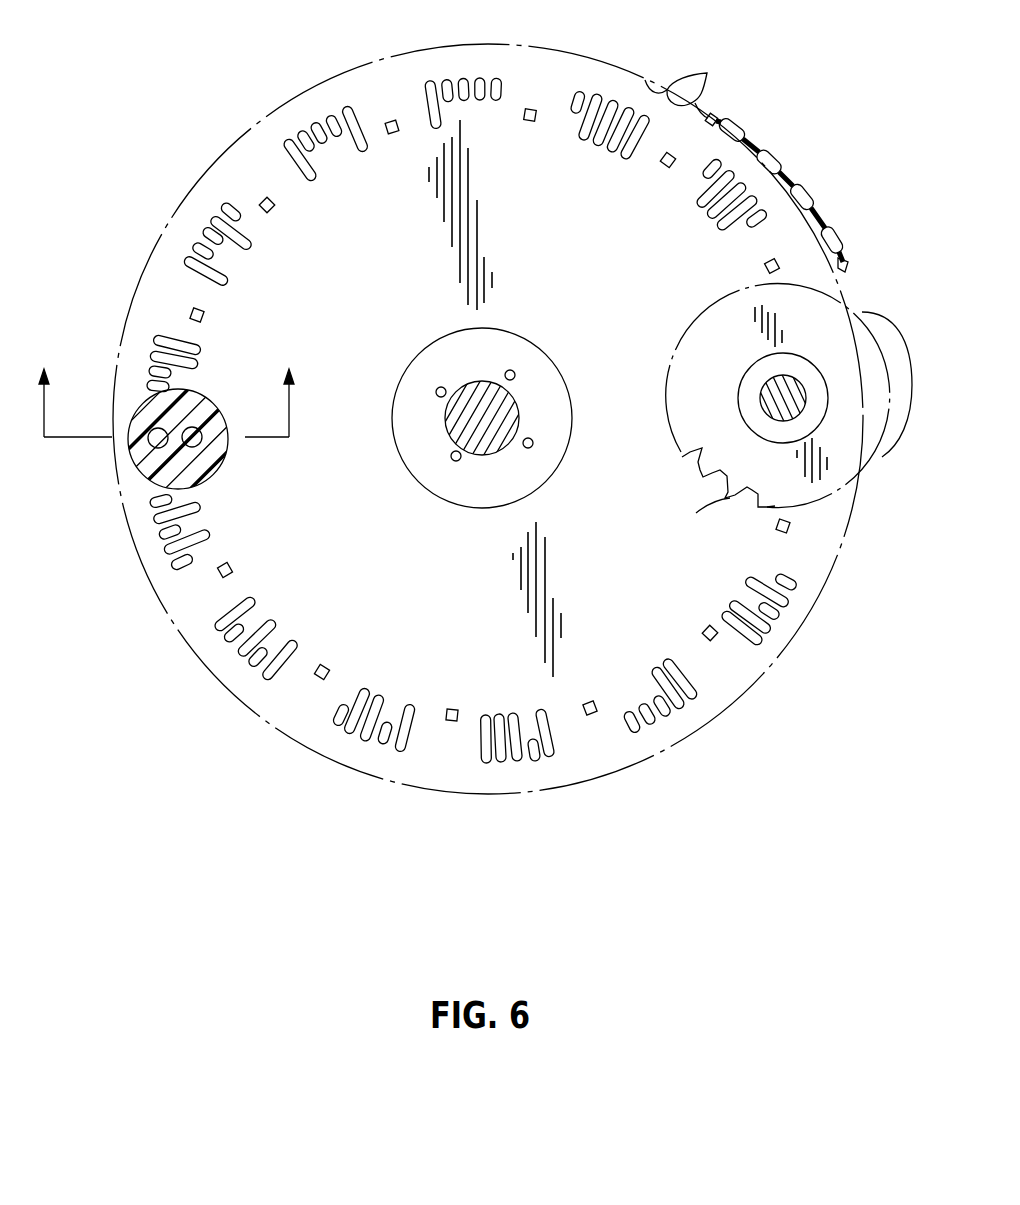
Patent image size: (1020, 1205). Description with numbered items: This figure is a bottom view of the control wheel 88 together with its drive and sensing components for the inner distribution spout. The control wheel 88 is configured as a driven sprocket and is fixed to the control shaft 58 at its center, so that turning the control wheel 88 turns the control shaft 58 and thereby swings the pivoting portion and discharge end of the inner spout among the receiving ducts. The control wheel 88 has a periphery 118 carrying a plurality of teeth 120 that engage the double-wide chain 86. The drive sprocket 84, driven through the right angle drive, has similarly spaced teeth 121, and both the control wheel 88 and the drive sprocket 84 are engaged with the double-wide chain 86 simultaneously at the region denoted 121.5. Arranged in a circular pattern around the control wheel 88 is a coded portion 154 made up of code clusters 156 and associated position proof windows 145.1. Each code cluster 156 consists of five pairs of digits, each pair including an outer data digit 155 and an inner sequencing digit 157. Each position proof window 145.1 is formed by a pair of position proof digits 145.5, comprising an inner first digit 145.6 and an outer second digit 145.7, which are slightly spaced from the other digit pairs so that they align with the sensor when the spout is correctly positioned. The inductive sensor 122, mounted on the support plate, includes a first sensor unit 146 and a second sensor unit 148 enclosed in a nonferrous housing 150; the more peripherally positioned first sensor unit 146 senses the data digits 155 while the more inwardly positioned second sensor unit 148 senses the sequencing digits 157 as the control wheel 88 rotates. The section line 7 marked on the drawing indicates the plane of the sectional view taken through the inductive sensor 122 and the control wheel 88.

The section line 7— 7 is at (166, 392).
The control shaft 58 is at (483, 395).
The drive sprocket 84 is at (805, 489).
The double-wide chain 86 is at (737, 122).
The control wheel 88 is at (397, 92).
The periphery 118 is at (548, 48).
The teeth 120 is at (693, 84).
The teeth 121 is at (697, 487).
The engagement region 121.5 is at (903, 312).
The inductive sensor 122 is at (165, 485).
The position proof window 145.1 is at (305, 683).
The pair of position proof digits 145.5 is at (228, 578).
The inner first digit 145.6 is at (665, 166).
The outer second digit 145.7 is at (447, 738).
The first sensor unit 146 is at (198, 433).
The second sensor unit 148 is at (155, 437).
The nonferrous housing 150 is at (175, 470).
The coded portion 154 is at (768, 246).
The outer data digit 155 is at (648, 685).
The code cluster 156 is at (510, 762).
The inner sequencing digit 157 is at (634, 733).